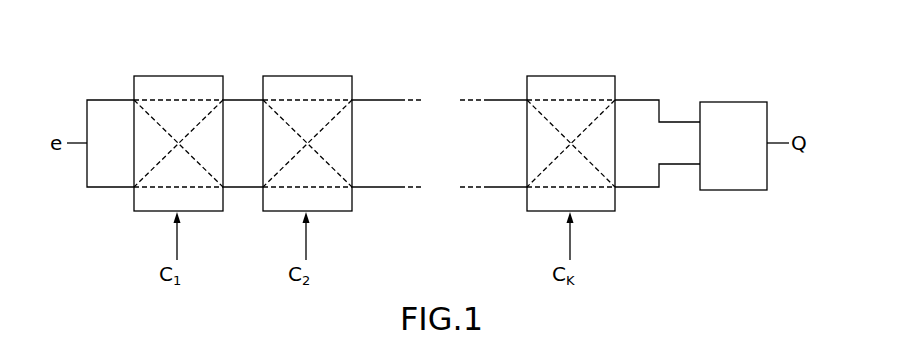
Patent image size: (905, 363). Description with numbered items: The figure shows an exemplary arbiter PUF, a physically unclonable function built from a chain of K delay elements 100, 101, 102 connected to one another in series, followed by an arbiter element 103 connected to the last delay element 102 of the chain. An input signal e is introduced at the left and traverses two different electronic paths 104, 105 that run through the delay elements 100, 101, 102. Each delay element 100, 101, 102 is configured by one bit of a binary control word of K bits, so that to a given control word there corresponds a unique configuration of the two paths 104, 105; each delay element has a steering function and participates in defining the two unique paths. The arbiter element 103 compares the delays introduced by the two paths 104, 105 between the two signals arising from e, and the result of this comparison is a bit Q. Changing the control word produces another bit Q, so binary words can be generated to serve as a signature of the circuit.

The delay element 100 is at (173, 76).
The delay element 101 is at (303, 76).
The delay element 102 is at (571, 76).
The arbiter element 103 is at (729, 102).
The electronic path 104 is at (379, 100).
The electronic path 105 is at (380, 187).